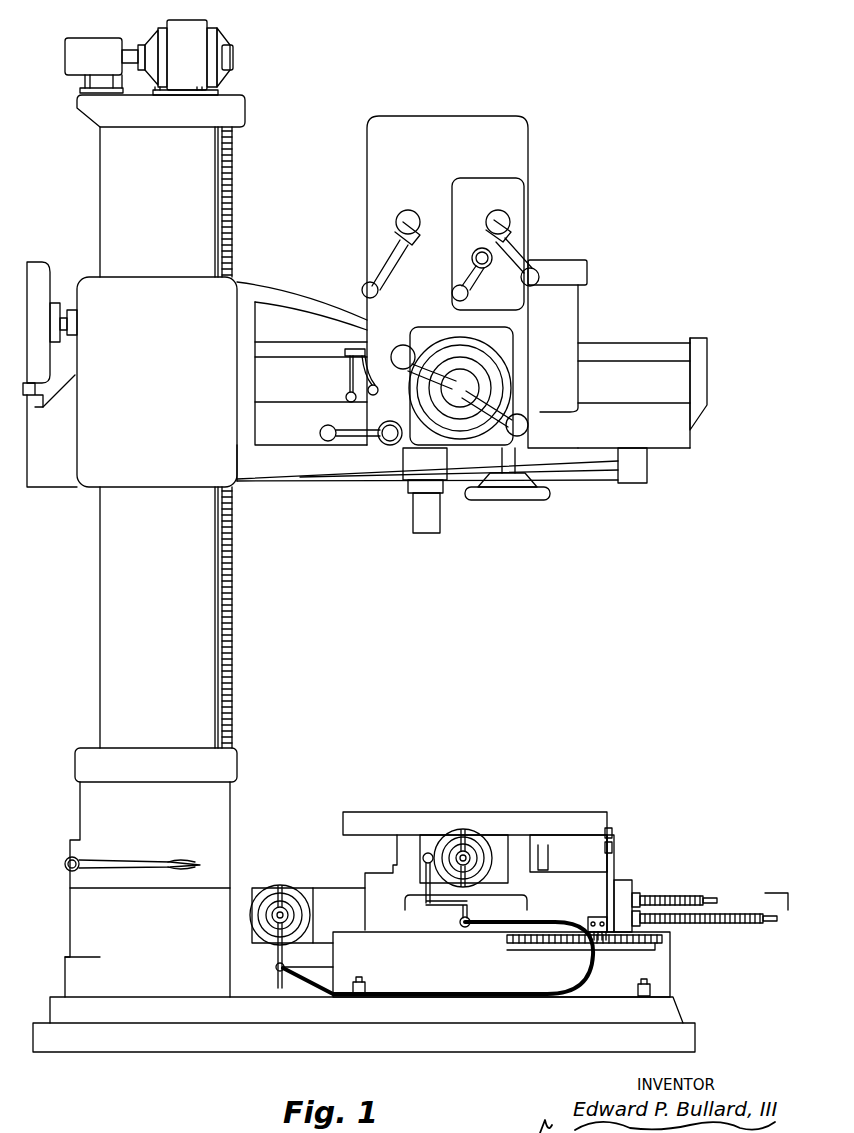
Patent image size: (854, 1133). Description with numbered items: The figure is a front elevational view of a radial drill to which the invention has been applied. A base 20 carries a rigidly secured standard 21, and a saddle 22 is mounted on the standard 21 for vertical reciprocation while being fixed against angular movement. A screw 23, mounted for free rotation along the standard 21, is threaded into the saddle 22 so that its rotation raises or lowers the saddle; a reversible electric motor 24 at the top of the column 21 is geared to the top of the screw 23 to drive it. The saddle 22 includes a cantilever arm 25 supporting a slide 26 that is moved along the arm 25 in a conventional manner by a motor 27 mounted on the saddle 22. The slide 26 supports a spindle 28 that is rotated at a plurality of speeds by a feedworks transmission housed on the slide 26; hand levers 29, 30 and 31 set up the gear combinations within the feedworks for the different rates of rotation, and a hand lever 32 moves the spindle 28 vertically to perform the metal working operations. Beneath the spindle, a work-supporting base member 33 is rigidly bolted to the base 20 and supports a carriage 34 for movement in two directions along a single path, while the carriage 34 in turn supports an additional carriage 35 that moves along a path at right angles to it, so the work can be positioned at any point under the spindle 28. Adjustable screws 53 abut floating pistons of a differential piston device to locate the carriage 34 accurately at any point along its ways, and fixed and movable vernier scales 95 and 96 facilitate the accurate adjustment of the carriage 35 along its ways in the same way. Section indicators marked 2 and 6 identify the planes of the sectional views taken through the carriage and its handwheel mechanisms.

The base 20 is at (678, 1022).
The standard 21 is at (112, 668).
The saddle 22 is at (105, 478).
The screw 23 is at (238, 545).
The reversible electric motor 24 is at (224, 70).
The cantilever arm 25 is at (322, 367).
The slide 26 is at (380, 175).
The motor 27 is at (45, 270).
The spindle 28 is at (413, 518).
The hand lever 29 is at (537, 270).
The hand lever 30 is at (468, 295).
The hand lever 31 is at (378, 292).
The hand lever 32 is at (403, 347).
The work-supporting base member 33 is at (665, 978).
The carriage 34 is at (422, 923).
The carriage 35 is at (417, 822).
The adjustable screw 53 is at (590, 920).
The fixed vernier scale 95 is at (612, 845).
The movable vernier scale 96 is at (610, 828).
The section line 2-2 handwheel 2 is at (463, 745).
The section line 6-6 handwheel 6 is at (243, 862).